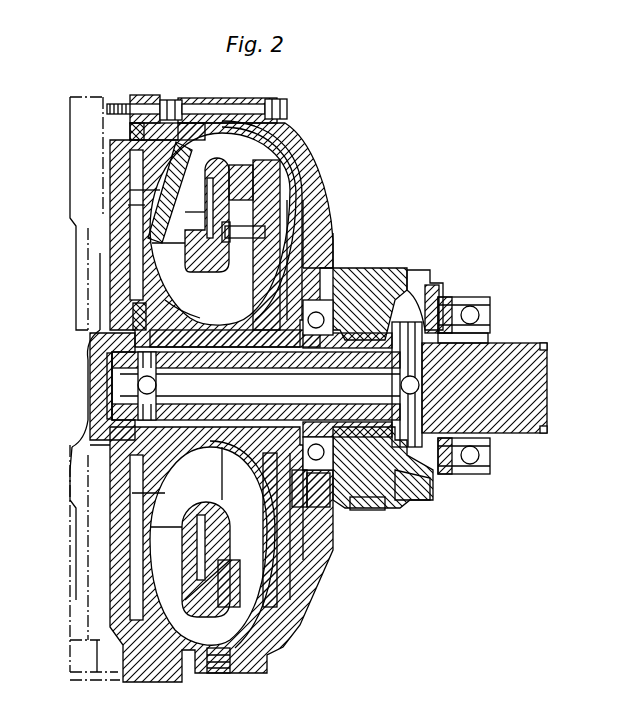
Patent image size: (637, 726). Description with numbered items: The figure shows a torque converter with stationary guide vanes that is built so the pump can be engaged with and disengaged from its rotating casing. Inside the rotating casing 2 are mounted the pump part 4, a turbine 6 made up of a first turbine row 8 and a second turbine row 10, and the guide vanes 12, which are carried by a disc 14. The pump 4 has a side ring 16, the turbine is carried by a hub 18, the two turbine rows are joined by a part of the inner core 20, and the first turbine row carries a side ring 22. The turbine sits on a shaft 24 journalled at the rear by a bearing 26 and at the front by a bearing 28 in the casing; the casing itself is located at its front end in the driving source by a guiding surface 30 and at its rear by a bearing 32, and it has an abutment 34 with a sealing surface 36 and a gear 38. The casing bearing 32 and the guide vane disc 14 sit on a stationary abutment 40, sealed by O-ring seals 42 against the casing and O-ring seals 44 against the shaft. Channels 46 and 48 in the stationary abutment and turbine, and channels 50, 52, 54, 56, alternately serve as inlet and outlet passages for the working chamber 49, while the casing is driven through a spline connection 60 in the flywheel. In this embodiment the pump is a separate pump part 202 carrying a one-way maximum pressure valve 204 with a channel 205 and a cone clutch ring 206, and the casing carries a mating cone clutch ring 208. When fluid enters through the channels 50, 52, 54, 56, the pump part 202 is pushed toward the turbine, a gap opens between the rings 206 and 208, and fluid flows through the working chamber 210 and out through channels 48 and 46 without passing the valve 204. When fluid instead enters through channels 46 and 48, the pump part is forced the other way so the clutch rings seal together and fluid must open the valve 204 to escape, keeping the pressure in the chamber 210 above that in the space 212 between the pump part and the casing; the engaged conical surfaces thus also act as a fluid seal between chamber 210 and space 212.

The rotating casing 2 is at (318, 200).
The pump part 4 is at (173, 194).
The turbine 6 is at (235, 268).
The first turbine row 8 is at (300, 150).
The second turbine row 10 is at (226, 300).
The guide vanes 12 is at (308, 185).
The disc 14 is at (333, 232).
The side ring 16 is at (185, 212).
The hub 18 is at (320, 248).
The inner core 20 is at (242, 155).
The side ring 22 is at (303, 163).
The shaft 24 is at (548, 378).
The bearing 26 is at (486, 300).
The bearing 28 is at (88, 425).
The guiding surface 30 is at (78, 455).
The bearing 32 is at (335, 507).
The abutment 34 is at (375, 507).
The sealing surface 36 is at (355, 508).
The gear 38 is at (412, 505).
The stationary abutment 40 is at (412, 290).
The O-ring seals 42 is at (340, 346).
The O-ring seals 44 is at (478, 345).
The channel 46 is at (432, 488).
The channel 48 is at (235, 326).
The working chamber 49 is at (132, 493).
The channel 50 is at (436, 292).
The channel 52 is at (400, 385).
The channel 54 is at (250, 396).
The channel 56 is at (152, 372).
The spline connection 60 is at (100, 137).
The pump part 202 is at (130, 212).
The one-way maximum pressure valve 204 is at (100, 318).
The channel 205 is at (187, 303).
The cone clutch ring 206 is at (140, 187).
The cone clutch ring 208 is at (130, 170).
The working chamber 210 is at (152, 276).
The space 212 is at (75, 255).